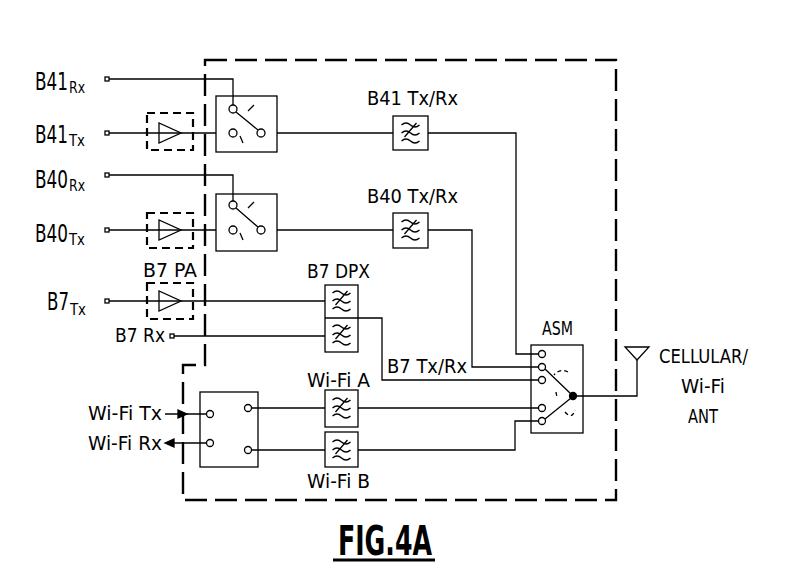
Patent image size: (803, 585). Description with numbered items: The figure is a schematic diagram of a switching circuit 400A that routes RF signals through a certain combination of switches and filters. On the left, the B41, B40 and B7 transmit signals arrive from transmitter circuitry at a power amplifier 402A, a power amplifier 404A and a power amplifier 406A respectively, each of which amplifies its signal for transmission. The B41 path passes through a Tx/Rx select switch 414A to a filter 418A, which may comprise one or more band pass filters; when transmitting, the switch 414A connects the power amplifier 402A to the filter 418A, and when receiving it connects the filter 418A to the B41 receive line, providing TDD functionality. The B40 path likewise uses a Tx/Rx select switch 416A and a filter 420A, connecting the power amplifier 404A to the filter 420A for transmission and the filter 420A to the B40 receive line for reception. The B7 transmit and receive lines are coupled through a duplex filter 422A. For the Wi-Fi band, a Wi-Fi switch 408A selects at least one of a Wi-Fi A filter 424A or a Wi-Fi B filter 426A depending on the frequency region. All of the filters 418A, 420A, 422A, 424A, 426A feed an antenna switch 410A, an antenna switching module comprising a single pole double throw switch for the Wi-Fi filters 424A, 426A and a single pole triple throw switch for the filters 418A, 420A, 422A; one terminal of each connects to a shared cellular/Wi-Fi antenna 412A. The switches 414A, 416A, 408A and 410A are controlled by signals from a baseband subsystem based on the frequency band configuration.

The switching circuit 400A is at (451, 48).
The power amplifier 402A is at (147, 125).
The power amplifier 404A is at (147, 223).
The power amplifier 406A is at (147, 292).
The Wi-Fi switch 408A is at (200, 462).
The antenna switch 410A is at (565, 433).
The antenna 412A is at (637, 347).
The Tx/Rx select switch 414A is at (255, 96).
The Tx/Rx select switch 416A is at (255, 194).
The filter 418A is at (428, 140).
The filter 420A is at (393, 222).
The duplex filter 422A is at (358, 305).
The Wi-Fi A filter 424A is at (358, 402).
The Wi-Fi B filter 426A is at (358, 447).